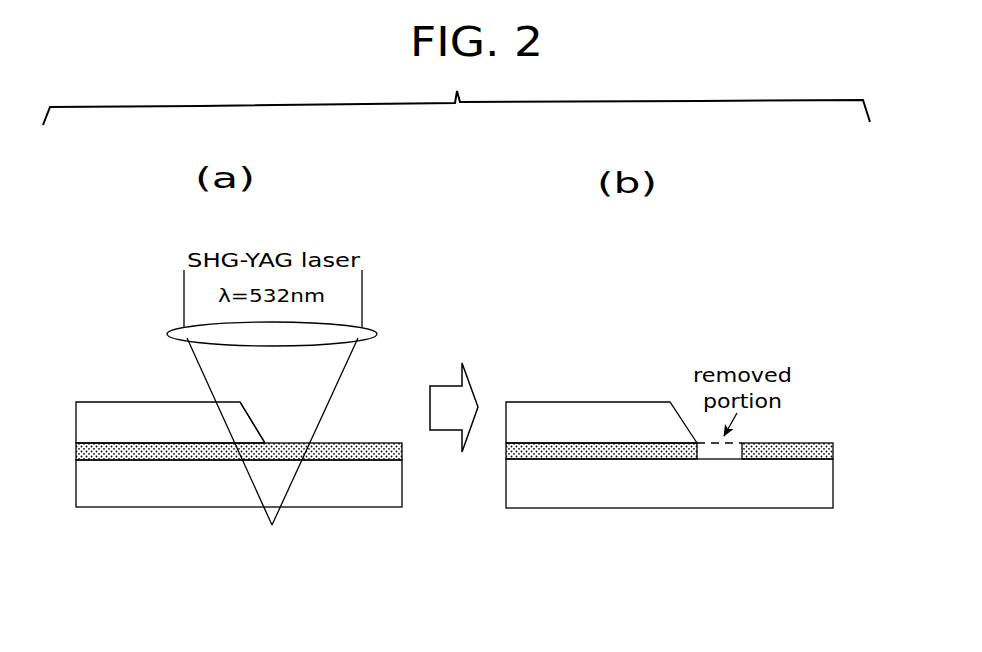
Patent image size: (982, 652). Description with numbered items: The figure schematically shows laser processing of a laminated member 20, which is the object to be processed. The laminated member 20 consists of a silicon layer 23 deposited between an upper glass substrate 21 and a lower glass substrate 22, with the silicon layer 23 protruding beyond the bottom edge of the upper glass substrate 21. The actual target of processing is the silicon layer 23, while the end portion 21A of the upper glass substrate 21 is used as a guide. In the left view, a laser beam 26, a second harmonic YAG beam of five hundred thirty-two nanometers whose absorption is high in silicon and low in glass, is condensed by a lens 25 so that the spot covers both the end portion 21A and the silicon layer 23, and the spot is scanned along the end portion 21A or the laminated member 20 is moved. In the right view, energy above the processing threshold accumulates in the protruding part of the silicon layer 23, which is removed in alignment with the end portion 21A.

The laminated member 20 is at (83, 377).
The upper glass substrate 21 is at (147, 407).
The end portion of the upper glass substrate 21A is at (252, 416).
The lower glass substrate 22 is at (162, 495).
The silicon layer 23 is at (350, 455).
The lens 25 is at (376, 333).
The laser beam 26 is at (333, 393).